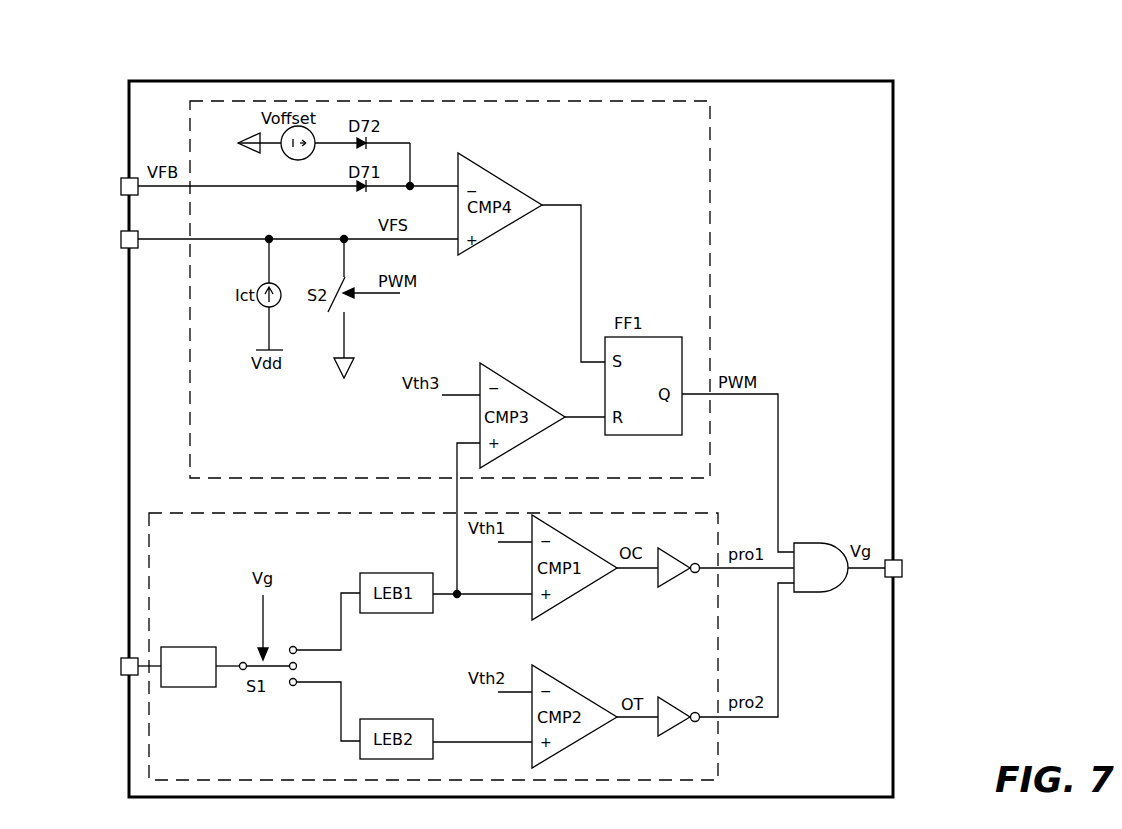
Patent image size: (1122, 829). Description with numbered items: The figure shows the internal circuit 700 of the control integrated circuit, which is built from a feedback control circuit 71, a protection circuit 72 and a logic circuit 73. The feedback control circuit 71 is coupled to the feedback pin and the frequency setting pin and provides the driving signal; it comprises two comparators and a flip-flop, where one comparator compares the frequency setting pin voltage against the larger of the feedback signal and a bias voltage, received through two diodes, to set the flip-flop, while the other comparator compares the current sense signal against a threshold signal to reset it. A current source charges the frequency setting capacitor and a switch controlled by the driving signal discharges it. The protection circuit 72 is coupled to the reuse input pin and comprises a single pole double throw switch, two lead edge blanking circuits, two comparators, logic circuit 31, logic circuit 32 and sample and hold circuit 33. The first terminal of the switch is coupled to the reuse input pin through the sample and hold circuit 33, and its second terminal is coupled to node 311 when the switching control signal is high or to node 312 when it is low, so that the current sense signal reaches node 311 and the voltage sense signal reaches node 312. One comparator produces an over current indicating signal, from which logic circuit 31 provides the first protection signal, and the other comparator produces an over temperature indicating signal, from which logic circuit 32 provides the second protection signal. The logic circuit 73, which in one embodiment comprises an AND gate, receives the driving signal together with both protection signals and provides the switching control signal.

The internal circuit 700 is at (826, 58).
The feedback control circuit 71 is at (710, 187).
The protection circuit 72 is at (714, 512).
The logic circuit 73 is at (830, 543).
The logic circuit 31 is at (690, 552).
The logic circuit 32 is at (690, 701).
The sample and hold circuit 33 is at (200, 647).
The node 311 is at (325, 623).
The node 312 is at (325, 710).